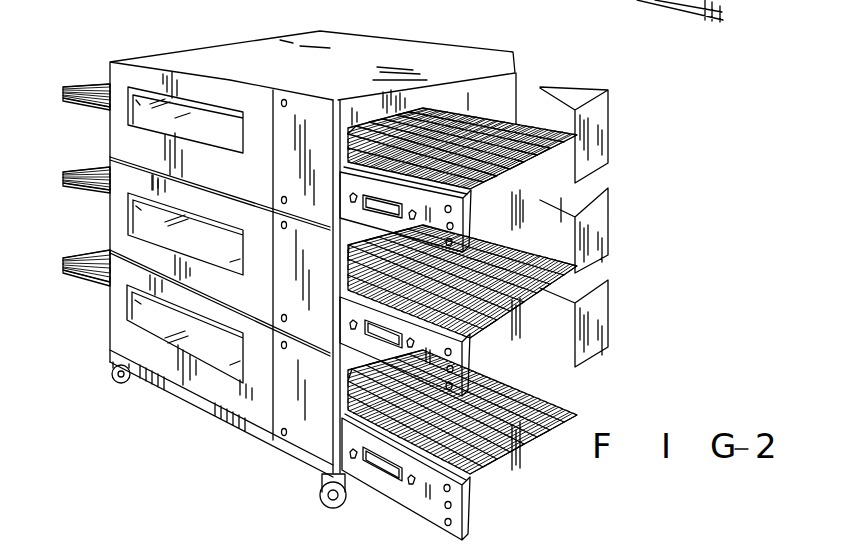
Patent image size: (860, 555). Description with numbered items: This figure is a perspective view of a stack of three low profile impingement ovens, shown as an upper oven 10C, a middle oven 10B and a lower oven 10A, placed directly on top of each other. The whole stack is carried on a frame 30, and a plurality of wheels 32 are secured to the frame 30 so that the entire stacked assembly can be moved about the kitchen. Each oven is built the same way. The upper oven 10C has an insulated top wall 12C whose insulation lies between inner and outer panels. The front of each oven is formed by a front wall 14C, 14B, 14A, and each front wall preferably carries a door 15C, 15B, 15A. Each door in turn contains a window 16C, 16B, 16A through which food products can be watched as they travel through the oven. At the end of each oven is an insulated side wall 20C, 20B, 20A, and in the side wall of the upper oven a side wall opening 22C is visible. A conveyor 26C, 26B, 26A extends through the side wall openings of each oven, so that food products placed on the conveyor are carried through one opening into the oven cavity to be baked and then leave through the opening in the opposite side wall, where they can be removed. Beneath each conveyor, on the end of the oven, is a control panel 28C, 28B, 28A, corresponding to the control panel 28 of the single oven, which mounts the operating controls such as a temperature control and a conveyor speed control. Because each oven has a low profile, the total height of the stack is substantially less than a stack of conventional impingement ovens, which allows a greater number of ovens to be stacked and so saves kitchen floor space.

The impingement oven 10C is at (107, 59).
The impingement oven 10B is at (103, 212).
The impingement oven 10A is at (103, 301).
The top wall 12C is at (268, 50).
The front wall 14C is at (125, 140).
The front wall 14B is at (118, 237).
The front wall 14A is at (118, 328).
The door 15C is at (235, 180).
The door 15B is at (263, 304).
The door 15A is at (263, 416).
The window 16C is at (220, 131).
The window 16B is at (220, 265).
The window 16A is at (220, 358).
The side wall 20C is at (510, 68).
The side wall 20B is at (352, 236).
The side wall 20A is at (352, 355).
The side wall opening 22C is at (450, 106).
The conveyor 26C is at (562, 87).
The conveyor 26B is at (378, 276).
The conveyor 26A is at (548, 394).
The control panel 28C is at (431, 216).
The control panel 28B is at (424, 358).
The control panel 28A is at (430, 492).
The control panel 28 is at (633, 6).
The frame 30 is at (200, 408).
The wheels 32 is at (118, 378).